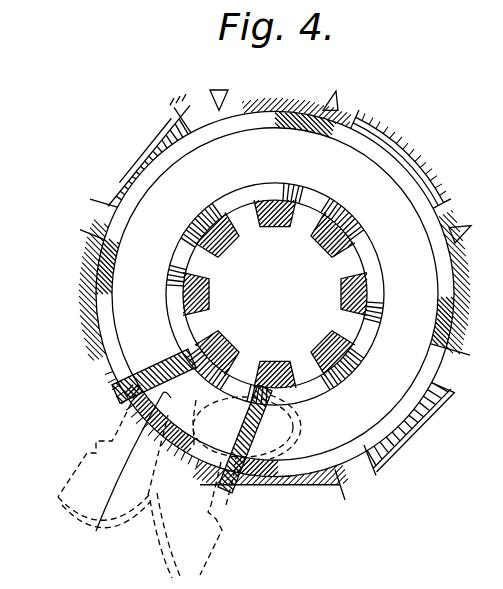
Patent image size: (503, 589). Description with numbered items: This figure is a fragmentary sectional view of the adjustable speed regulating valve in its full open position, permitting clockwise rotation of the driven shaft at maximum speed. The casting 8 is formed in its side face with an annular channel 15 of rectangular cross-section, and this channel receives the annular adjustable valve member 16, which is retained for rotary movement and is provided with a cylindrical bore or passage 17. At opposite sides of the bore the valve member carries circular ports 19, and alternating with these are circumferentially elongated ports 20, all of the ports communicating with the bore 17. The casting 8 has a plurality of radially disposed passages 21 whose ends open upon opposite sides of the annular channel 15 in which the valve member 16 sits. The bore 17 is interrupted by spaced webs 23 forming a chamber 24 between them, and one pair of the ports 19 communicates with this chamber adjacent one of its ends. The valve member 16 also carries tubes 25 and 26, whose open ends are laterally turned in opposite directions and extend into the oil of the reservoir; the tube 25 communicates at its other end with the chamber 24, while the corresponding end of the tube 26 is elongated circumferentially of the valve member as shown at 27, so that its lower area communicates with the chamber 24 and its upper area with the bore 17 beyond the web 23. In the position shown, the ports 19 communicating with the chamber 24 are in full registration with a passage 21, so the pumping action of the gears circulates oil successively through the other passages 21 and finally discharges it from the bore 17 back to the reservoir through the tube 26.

The casting 8 is at (437, 392).
The annular channel 15 is at (407, 163).
The annular adjustable valve member 16 is at (425, 186).
The cylindrical bore or passage 17 is at (411, 300).
The ports 19 is at (316, 201).
The circumferentially elongated ports 20 is at (259, 190).
The radially disposed passages 21 is at (195, 122).
The spaced webs 23 is at (152, 360).
The chamber 24 is at (96, 529).
The tube 25 is at (115, 431).
The tube 26 is at (225, 503).
The circumferentially elongated end of the tube 27 is at (305, 403).